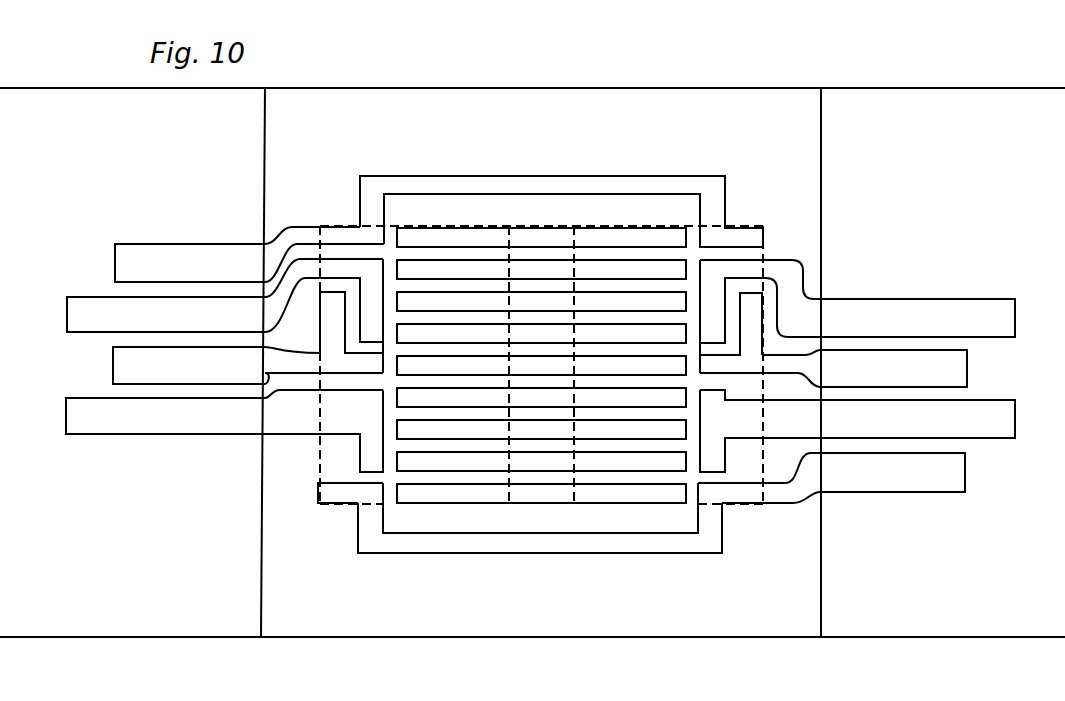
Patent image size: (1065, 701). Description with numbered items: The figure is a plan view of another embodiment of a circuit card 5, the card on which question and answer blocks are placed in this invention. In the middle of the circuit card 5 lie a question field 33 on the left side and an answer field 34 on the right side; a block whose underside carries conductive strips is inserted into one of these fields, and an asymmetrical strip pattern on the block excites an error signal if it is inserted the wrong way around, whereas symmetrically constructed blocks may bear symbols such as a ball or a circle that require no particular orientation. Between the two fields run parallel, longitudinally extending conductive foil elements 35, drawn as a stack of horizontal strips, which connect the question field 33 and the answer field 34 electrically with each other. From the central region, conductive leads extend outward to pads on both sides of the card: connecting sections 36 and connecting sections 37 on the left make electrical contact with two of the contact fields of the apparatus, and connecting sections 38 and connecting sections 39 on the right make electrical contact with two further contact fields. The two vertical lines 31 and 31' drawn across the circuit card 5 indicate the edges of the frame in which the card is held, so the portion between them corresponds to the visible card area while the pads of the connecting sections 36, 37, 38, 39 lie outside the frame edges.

The circuit card 5 is at (520, 630).
The line 31 is at (235, 362).
The line 31' is at (857, 362).
The question field 33 is at (337, 457).
The answer field 34 is at (742, 470).
The conductive foil elements 35 is at (642, 465).
The connecting sections 36 is at (162, 423).
The connecting sections 37 is at (123, 368).
The connecting sections 38 is at (1002, 416).
The connecting sections 39 is at (955, 475).